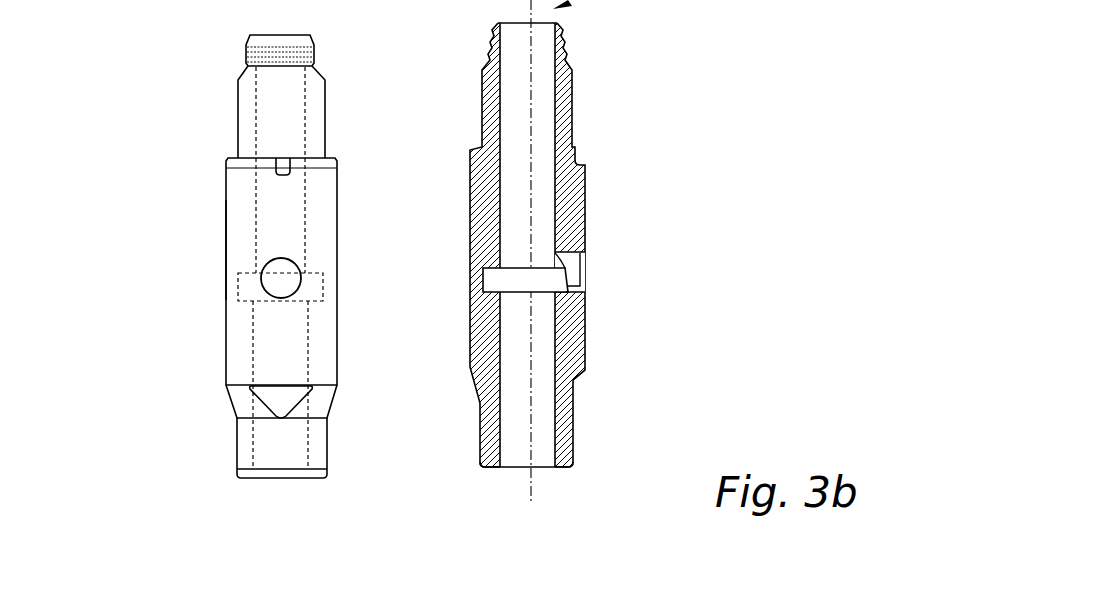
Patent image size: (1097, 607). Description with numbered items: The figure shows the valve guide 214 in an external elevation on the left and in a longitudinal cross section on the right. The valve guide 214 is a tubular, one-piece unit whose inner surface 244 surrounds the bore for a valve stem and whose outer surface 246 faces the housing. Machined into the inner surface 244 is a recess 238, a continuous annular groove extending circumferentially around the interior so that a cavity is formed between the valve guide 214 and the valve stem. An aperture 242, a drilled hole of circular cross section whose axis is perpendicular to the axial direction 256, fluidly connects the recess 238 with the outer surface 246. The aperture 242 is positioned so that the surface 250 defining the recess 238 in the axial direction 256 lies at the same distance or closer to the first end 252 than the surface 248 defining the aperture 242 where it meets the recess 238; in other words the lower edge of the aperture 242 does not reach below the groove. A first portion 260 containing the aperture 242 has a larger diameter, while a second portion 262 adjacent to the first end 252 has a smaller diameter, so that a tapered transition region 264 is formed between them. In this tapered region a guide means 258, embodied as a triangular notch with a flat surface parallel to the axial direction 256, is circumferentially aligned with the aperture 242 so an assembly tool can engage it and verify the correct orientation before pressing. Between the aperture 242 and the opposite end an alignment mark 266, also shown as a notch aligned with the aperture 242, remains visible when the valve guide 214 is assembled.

The valve guide 214 is at (449, 262).
The recess 238 is at (490, 278).
The aperture 242 is at (272, 285).
The inner surface 244 is at (553, 210).
The outer surface 246 is at (470, 175).
The surface defining the aperture 248 is at (585, 284).
The surface defining the recess 250 is at (565, 290).
The first end 252 is at (496, 482).
The axial direction 256 is at (528, 477).
The guide means 258 is at (263, 402).
The first portion 260 is at (226, 230).
The second portion 262 is at (237, 455).
The tapered transition region 264 is at (327, 400).
The alignment mark 266 is at (283, 165).